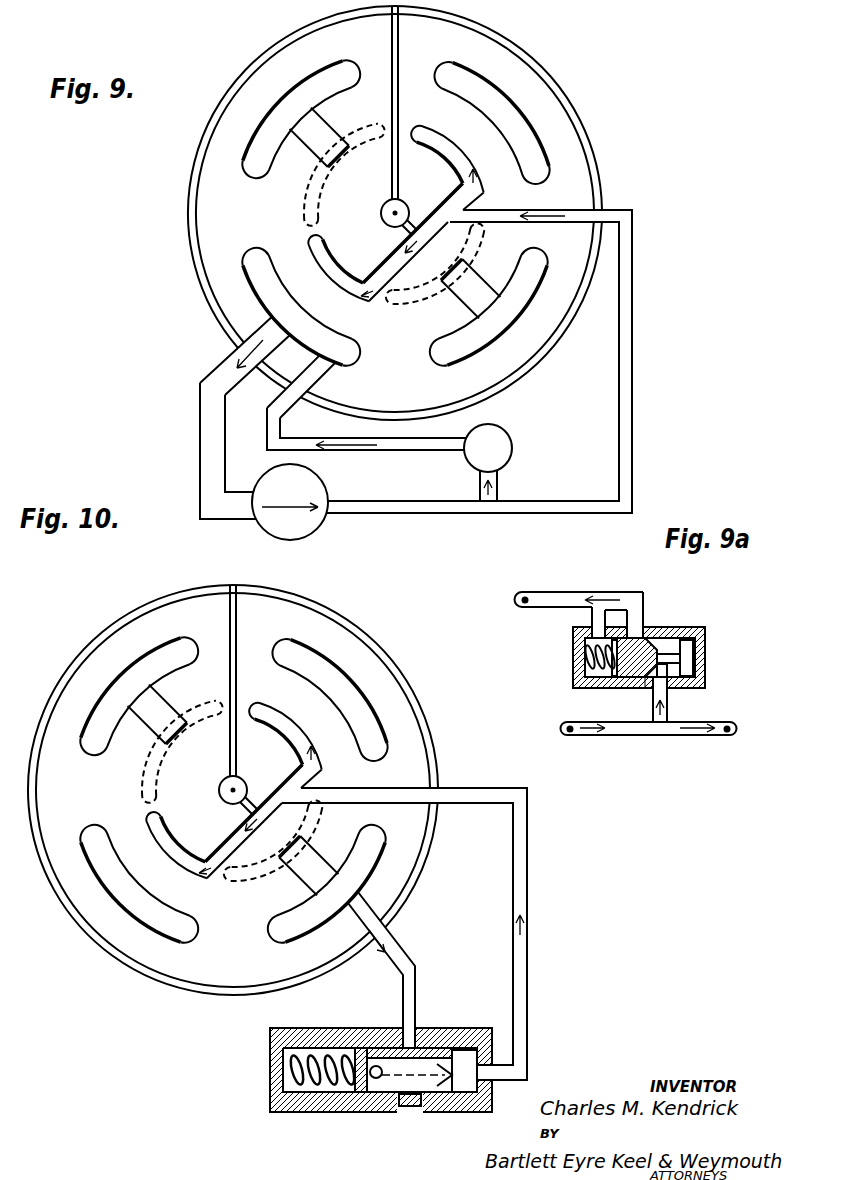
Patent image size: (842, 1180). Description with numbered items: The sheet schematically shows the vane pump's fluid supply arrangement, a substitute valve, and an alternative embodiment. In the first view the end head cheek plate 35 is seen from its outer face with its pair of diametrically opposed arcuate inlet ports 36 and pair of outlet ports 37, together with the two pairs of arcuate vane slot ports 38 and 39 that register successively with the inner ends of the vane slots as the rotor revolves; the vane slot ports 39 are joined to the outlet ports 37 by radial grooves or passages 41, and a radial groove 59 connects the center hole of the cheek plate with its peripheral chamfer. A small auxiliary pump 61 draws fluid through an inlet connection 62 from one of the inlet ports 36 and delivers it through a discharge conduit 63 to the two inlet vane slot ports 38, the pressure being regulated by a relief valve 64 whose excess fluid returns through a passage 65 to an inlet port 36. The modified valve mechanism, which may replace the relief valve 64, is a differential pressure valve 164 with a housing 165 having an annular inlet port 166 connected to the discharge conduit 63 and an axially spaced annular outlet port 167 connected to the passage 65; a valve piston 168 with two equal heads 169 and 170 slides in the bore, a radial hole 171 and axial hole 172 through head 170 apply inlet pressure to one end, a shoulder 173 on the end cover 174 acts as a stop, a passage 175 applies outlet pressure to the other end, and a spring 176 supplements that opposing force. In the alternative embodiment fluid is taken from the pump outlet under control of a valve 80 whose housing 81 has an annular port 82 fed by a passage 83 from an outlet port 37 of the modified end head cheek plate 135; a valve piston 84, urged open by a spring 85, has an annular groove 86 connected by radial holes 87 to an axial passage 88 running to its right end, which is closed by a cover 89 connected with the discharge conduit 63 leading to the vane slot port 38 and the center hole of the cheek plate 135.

In FIG. 9, the end head cheek plate 35 is at (404, 213).
In FIG. 10, the modified end head cheek plate 135 is at (260, 790).
In FIG. 9, the inlet slots or ports 36 is at (395, 214).
In FIG. 10, the inlet slots or ports 36 is at (236, 791).
In FIG. 9, the outlet slots or ports 37 is at (394, 222).
In FIG. 10, the outlet slots or ports 37 is at (232, 795).
In FIG. 9, the vane slot ports 38 is at (399, 214).
In FIG. 10, the vane slot ports 38 is at (233, 790).
In FIG. 9, the vane slot ports 39 is at (374, 230).
In FIG. 10, the vane slot ports 39 is at (213, 804).
In FIG. 9, the radial grooves or passages 41 is at (401, 207).
In FIG. 10, the radial grooves or passages 41 is at (238, 786).
In FIG. 9, the radial groove 59 is at (420, 102).
In FIG. 10, the radial groove 59 is at (254, 680).
In FIG. 9, the auxiliary pump 61 is at (305, 510).
In FIG. 9, the inlet connection 62 is at (220, 418).
In FIG. 9, the discharge conduit 63 is at (479, 381).
In FIG. 10, the discharge conduit 63 is at (427, 934).
In FIG. 9A, the discharge conduit 63 is at (645, 730).
In FIG. 9, the relief valve 64 is at (513, 447).
In FIG. 9, the passage 65 is at (366, 423).
In FIG. 9A, the passage 65 is at (571, 597).
In FIG. 10, the valve 80 is at (305, 1028).
In FIG. 10, the housing 81 is at (466, 1030).
In FIG. 10, the annular port 82 is at (410, 1108).
In FIG. 10, the passage 83 is at (403, 970).
In FIG. 10, the valve piston 84 is at (430, 1046).
In FIG. 10, the spring 85 is at (340, 1094).
In FIG. 10, the annular groove 86 is at (374, 1046).
In FIG. 10, the radial holes 87 is at (376, 1082).
In FIG. 10, the axial passage 88 is at (431, 1094).
In FIG. 10, the cover 89 is at (492, 1112).
In FIG. 9A, the differential pressure valve 164 is at (569, 681).
In FIG. 9A, the housing 165 is at (645, 620).
In FIG. 9A, the annular inlet port 166 is at (665, 630).
In FIG. 9A, the annular outlet port 167 is at (647, 690).
In FIG. 9A, the valve piston 168 is at (632, 678).
In FIG. 9A, the head 169 is at (604, 680).
In FIG. 9A, the head 170 is at (672, 668).
In FIG. 9A, the radial hole 171 is at (668, 695).
In FIG. 9A, the axial hole 172 is at (690, 660).
In FIG. 9A, the shoulder 173 is at (700, 640).
In FIG. 9A, the end cover 174 is at (700, 676).
In FIG. 9A, the passage 175 is at (590, 618).
In FIG. 9A, the spring 176 is at (585, 655).